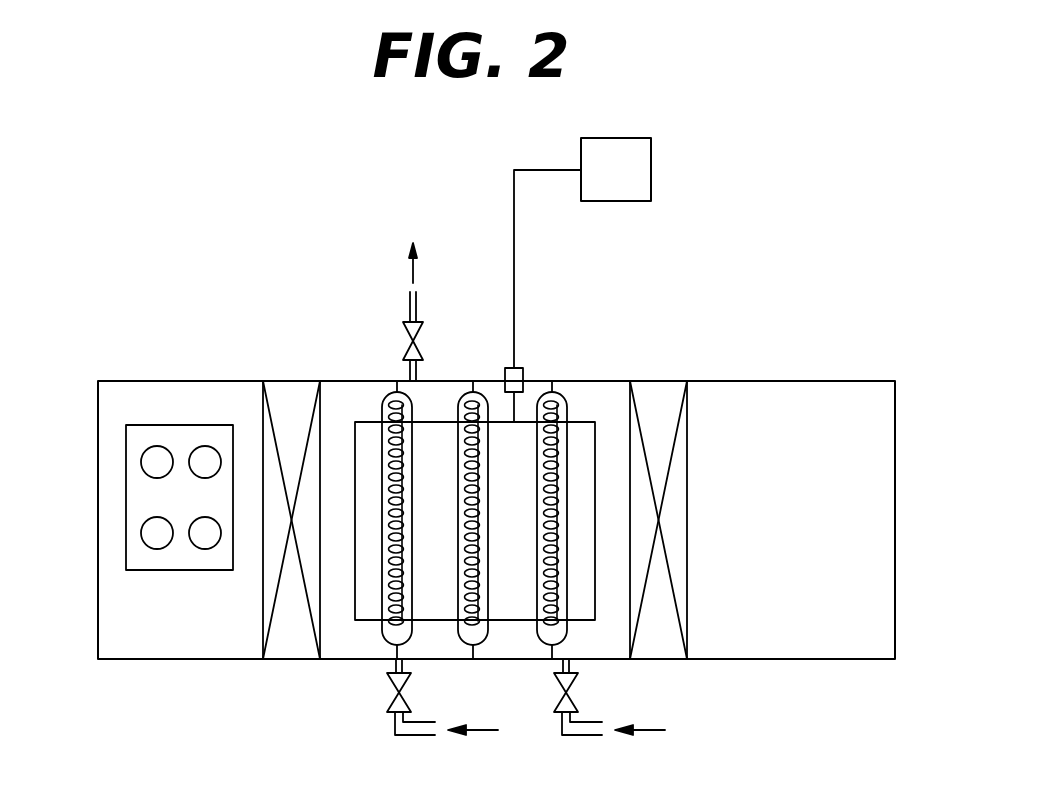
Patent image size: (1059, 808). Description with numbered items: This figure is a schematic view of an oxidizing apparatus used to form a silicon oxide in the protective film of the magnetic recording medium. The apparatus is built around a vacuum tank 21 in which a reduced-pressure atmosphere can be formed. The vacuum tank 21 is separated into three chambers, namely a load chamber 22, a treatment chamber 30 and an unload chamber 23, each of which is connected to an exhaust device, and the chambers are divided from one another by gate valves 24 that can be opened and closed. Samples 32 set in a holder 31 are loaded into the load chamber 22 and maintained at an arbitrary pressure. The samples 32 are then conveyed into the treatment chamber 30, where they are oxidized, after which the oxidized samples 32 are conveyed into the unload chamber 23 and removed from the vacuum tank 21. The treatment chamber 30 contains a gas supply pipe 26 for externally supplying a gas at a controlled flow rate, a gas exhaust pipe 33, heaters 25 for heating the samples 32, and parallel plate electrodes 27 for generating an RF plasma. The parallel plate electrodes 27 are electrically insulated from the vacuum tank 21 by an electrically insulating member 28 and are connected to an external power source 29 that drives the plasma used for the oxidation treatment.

The vacuum tank 21 is at (350, 381).
The load chamber 22 is at (205, 660).
The unload chamber 23 is at (797, 640).
The gate valve 24 is at (267, 381).
The heater 25 is at (383, 404).
The gas supply pipe 26 is at (390, 698).
The parallel plate electrodes 27 is at (437, 420).
The electrically insulating member 28 is at (524, 380).
The external power source 29 is at (651, 160).
The treatment chamber 30 is at (335, 648).
The holder 31 is at (153, 425).
The sample 32 is at (150, 548).
The gas exhaust pipe 33 is at (410, 372).